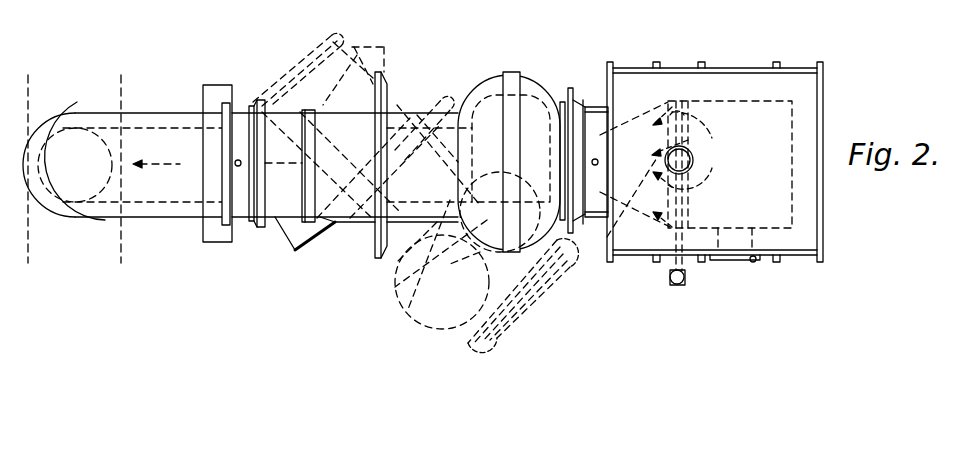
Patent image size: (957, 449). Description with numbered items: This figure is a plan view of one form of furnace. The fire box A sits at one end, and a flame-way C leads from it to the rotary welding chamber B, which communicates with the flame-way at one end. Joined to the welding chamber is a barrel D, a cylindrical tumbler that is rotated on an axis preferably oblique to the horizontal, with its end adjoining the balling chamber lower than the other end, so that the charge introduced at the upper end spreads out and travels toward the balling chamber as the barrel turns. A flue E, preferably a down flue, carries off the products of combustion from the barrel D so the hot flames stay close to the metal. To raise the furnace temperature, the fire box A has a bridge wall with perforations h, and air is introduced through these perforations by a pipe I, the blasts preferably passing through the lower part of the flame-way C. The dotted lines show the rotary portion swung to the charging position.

The fire box A is at (747, 88).
The rotary welding chamber B is at (532, 90).
The flame-way C is at (599, 236).
The barrel D is at (343, 137).
The flue E is at (150, 137).
The perforations h is at (672, 110).
The pipe I is at (686, 282).